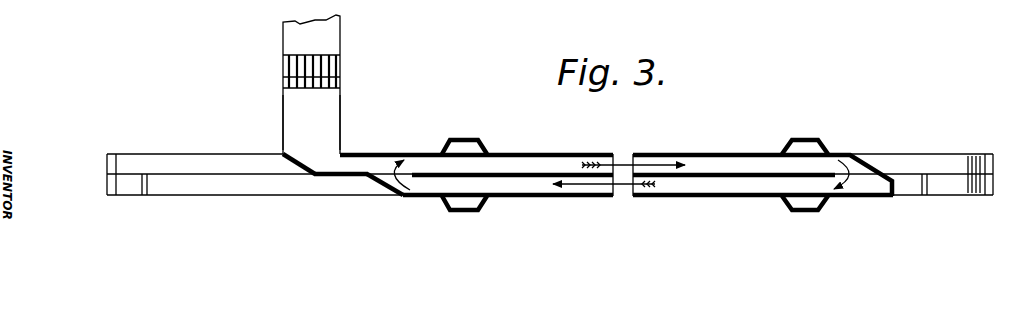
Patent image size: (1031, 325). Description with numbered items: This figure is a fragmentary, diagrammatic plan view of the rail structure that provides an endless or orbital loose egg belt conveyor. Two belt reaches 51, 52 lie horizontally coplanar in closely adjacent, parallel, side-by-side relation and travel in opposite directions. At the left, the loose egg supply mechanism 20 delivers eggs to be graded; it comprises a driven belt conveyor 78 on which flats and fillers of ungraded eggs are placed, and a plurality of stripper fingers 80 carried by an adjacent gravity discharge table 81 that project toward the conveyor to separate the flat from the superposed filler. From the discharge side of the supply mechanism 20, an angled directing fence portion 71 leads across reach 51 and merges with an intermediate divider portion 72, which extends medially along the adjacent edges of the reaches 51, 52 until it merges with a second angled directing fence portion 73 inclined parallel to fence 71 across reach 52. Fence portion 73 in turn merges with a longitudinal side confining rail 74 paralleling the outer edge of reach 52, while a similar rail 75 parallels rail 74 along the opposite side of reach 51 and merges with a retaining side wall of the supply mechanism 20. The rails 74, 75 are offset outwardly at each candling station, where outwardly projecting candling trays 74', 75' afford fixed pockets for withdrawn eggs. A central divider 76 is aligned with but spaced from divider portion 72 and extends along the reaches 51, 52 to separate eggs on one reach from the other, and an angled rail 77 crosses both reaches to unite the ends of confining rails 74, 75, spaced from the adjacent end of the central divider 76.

The loose egg supply mechanism 20 is at (279, 40).
The belt conveyor 78 is at (337, 30).
The stripper fingers 80 is at (330, 72).
The gravity discharge table 81 is at (332, 113).
The directing fence portion 71 is at (294, 166).
The intermediate divider portion 72 is at (328, 177).
The second angled directing fence portion 73 is at (378, 183).
The longitudinal side confining rail 74 is at (648, 213).
The candling tray 74' is at (619, 219).
The rail 75 is at (490, 137).
The candling tray 75' is at (635, 131).
The central divider 76 is at (697, 175).
The angled rail 77 is at (868, 165).
The upper reach 51 is at (530, 165).
The upper reach 52 is at (528, 188).